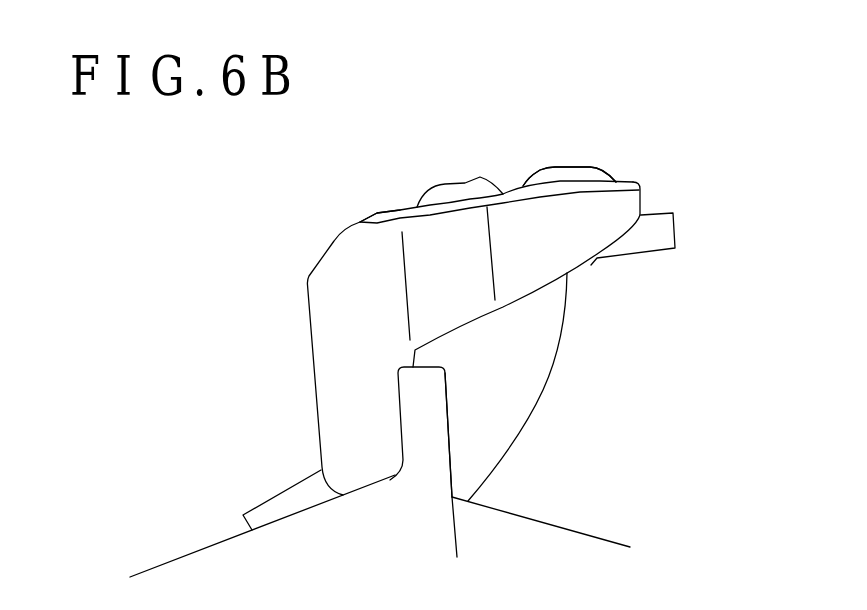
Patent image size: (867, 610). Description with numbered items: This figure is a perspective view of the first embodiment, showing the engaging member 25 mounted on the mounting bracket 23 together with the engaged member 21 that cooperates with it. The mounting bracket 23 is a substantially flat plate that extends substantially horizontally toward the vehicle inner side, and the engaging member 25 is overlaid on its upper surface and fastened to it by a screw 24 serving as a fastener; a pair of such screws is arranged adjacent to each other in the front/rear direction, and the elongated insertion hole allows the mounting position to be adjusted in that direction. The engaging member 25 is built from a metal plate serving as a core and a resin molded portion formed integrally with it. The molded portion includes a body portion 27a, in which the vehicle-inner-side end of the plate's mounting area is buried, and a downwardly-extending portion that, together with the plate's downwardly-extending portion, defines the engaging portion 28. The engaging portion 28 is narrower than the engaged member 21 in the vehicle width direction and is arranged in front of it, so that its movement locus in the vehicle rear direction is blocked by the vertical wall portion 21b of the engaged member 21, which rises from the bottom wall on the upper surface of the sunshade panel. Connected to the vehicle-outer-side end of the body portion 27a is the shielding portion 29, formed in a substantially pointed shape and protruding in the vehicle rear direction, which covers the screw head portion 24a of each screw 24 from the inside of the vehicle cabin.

The engaged member 21 is at (398, 414).
The vertical wall portion 21b is at (449, 405).
The mounting bracket 23 is at (658, 213).
The screw 24 is at (569, 176).
The screw head portion 24a is at (533, 175).
The engaging member 25 is at (455, 338).
The body portion 27a is at (387, 210).
The engaging portion 28 is at (320, 343).
The shielding portion 29 is at (597, 228).